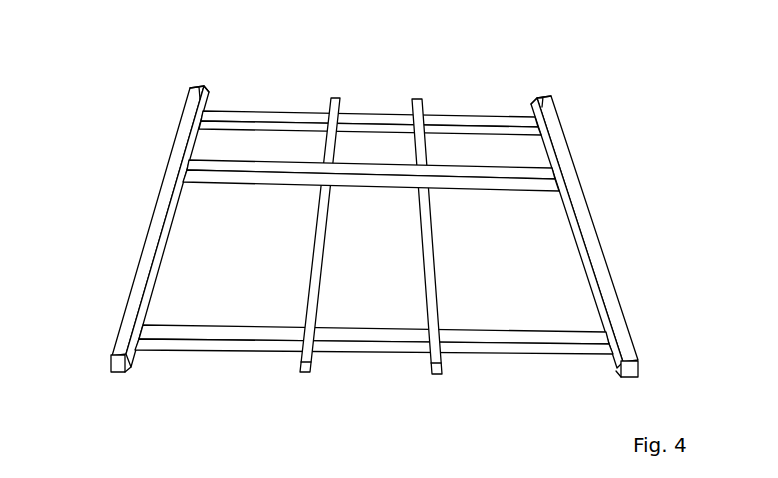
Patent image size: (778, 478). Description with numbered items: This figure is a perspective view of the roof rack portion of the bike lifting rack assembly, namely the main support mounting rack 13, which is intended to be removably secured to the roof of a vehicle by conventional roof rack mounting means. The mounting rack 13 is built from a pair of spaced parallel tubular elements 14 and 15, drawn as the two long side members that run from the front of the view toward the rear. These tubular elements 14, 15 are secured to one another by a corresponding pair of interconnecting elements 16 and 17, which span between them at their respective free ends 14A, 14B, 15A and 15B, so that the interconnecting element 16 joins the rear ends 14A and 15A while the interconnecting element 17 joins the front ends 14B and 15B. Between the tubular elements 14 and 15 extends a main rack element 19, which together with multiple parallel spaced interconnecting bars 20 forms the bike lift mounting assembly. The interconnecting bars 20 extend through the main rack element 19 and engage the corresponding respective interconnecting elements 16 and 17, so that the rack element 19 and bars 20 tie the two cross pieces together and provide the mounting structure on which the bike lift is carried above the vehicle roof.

The main support mounting rack 13 is at (556, 86).
The tubular element 14 is at (160, 218).
The free end of tubular element 14A is at (186, 98).
The free end of tubular element 14B is at (124, 352).
The tubular element 15 is at (585, 228).
The free end of tubular element 15A is at (553, 126).
The free end of tubular element 15B is at (628, 352).
The interconnecting element 16 is at (250, 112).
The interconnecting element 17 is at (223, 333).
The main rack element 19 is at (365, 168).
The interconnecting bars 20 is at (432, 313).